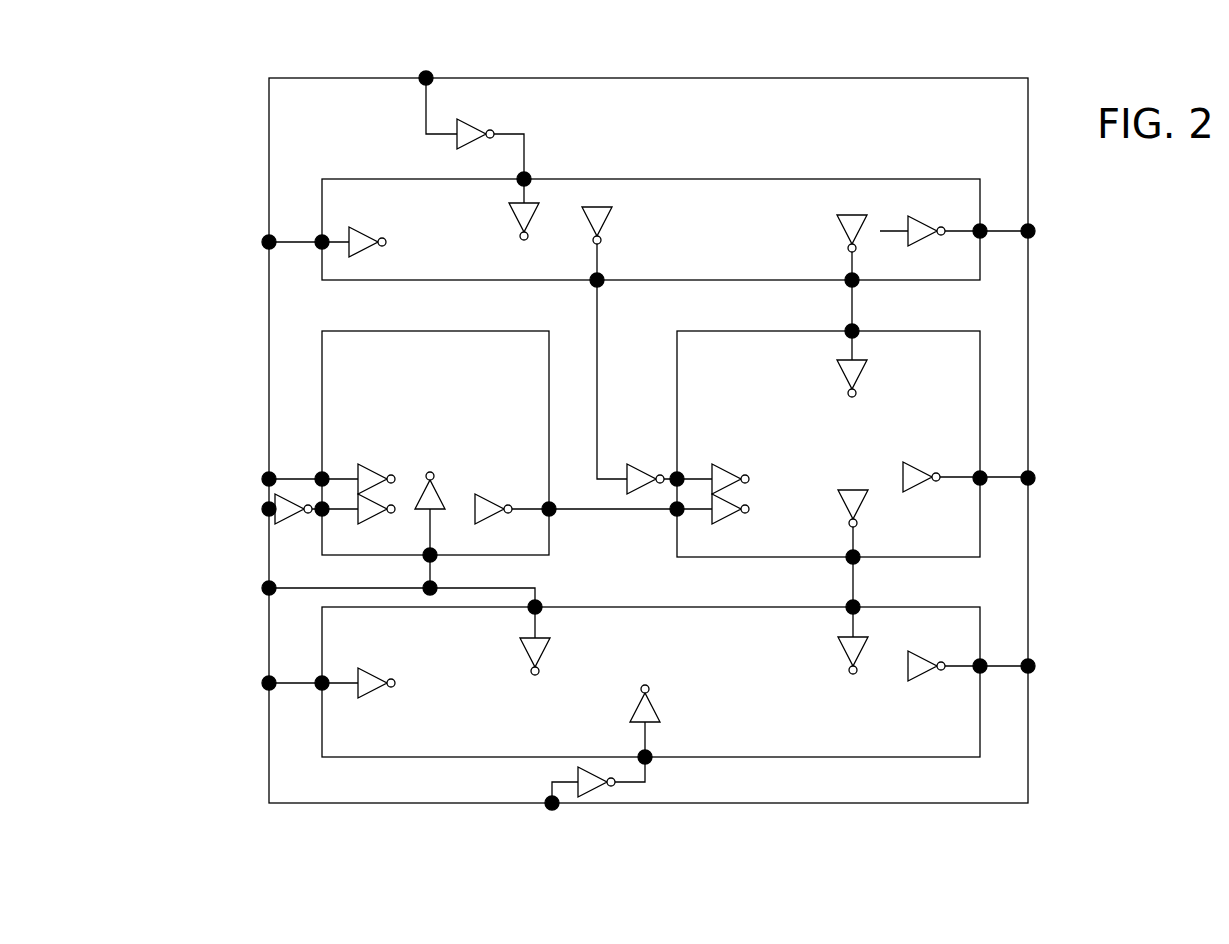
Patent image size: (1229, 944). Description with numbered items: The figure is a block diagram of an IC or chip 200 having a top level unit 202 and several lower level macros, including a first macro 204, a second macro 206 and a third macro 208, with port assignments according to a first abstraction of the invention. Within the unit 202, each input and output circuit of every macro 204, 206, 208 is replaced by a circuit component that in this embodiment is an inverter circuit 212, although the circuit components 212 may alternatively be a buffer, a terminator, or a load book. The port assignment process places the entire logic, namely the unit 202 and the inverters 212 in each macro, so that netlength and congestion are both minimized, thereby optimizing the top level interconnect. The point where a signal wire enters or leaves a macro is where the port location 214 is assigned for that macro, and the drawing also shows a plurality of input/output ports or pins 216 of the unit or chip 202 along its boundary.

The IC or chip 200 is at (243, 140).
The top level unit 202 is at (762, 87).
The macro 204 is at (747, 193).
The macro 206 is at (488, 342).
The macro 208 is at (908, 342).
The inverter circuit 212 is at (370, 250).
The port location 214 is at (320, 240).
The input/output ports or pins 216 is at (432, 75).